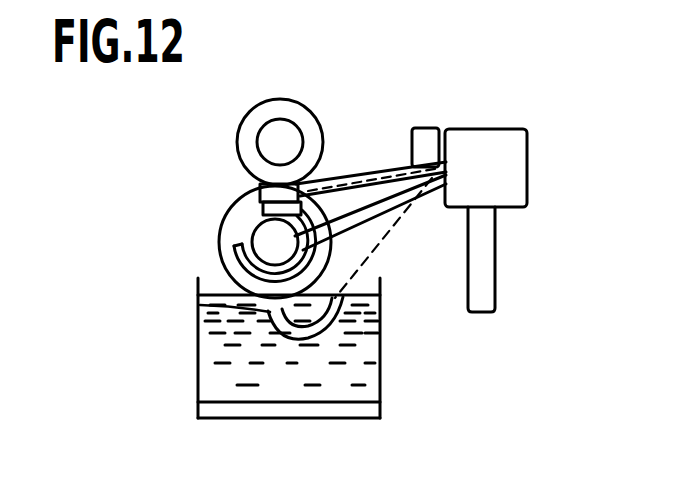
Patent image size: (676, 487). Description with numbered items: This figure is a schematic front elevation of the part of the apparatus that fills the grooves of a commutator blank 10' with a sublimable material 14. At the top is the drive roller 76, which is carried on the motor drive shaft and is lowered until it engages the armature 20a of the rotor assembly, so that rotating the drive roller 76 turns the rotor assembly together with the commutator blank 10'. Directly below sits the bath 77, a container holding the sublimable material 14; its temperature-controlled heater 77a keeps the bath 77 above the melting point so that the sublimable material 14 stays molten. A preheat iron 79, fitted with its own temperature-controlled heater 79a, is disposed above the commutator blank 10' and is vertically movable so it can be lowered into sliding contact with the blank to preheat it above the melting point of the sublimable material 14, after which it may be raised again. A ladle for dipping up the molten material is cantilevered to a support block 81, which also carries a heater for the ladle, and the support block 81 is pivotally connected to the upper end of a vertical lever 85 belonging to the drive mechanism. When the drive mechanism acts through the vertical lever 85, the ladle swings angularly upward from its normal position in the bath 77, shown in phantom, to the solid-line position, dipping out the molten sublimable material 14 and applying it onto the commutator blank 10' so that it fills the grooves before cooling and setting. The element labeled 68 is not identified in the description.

The drive roller 76 is at (252, 118).
The preheat iron 79 is at (260, 194).
The temperature-controlled heater 79a is at (425, 128).
The support block 81 is at (468, 128).
The vertical lever 85 is at (468, 292).
The commutator blank 10' is at (249, 267).
The armature 20a is at (218, 240).
The inner roller 68 is at (243, 256).
The sublimable material 14 is at (198, 372).
The bath 77 is at (380, 363).
The temperature-controlled heater 77a is at (380, 420).